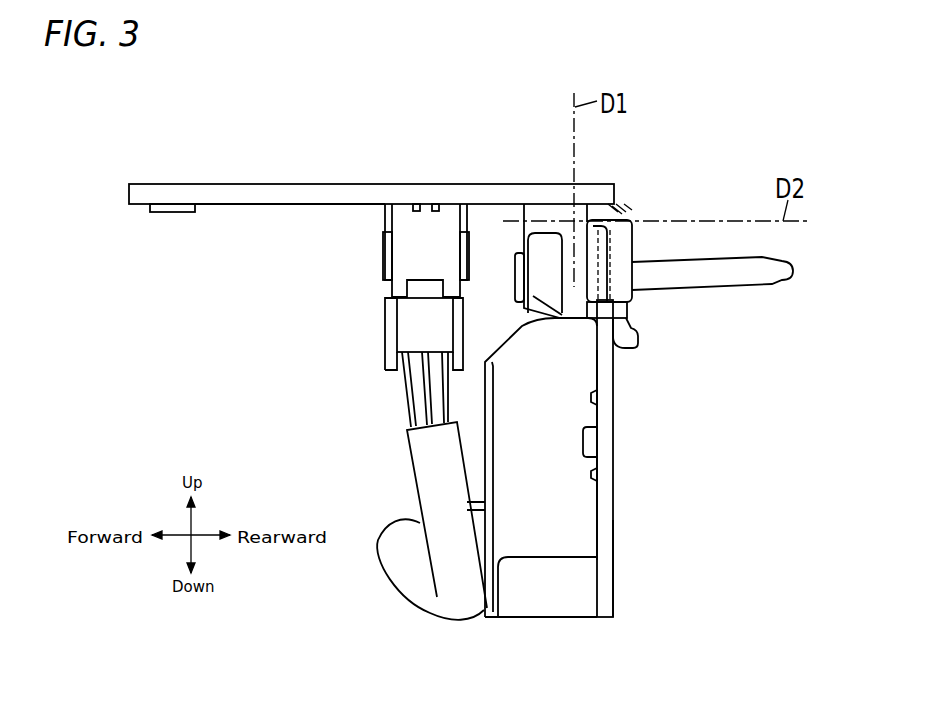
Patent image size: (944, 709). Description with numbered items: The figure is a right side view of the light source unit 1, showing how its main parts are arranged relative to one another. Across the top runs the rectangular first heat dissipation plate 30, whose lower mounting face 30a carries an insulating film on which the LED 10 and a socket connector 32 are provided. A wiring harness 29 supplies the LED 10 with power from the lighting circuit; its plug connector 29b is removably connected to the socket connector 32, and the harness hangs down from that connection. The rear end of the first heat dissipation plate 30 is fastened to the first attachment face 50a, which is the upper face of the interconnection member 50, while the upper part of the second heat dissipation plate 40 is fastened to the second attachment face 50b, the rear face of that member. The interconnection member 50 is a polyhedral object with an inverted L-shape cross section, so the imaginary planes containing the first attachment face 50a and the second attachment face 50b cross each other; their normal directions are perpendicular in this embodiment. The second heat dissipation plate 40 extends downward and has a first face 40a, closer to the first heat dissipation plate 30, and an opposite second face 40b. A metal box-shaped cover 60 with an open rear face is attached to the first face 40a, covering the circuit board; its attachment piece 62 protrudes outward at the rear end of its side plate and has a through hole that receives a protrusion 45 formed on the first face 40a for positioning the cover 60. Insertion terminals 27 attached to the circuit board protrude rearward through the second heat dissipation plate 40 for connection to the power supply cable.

The light source unit 1 is at (611, 183).
The LED 10 is at (172, 213).
The insertion terminal 27 is at (700, 283).
The wiring harness 29 is at (425, 474).
The plug connector 29b is at (393, 342).
The first heat dissipation plate 30 is at (333, 196).
The mounting face 30a is at (258, 206).
The socket connector 32 is at (405, 248).
The second heat dissipation plate 40 is at (606, 517).
The first face 40a is at (595, 521).
The second face 40b is at (613, 568).
The protrusion 45 is at (584, 444).
The interconnection member 50 is at (612, 214).
The first attachment face 50a is at (543, 204).
The second attachment face 50b is at (613, 250).
The cover 60 is at (525, 356).
The attachment piece 62 is at (596, 404).